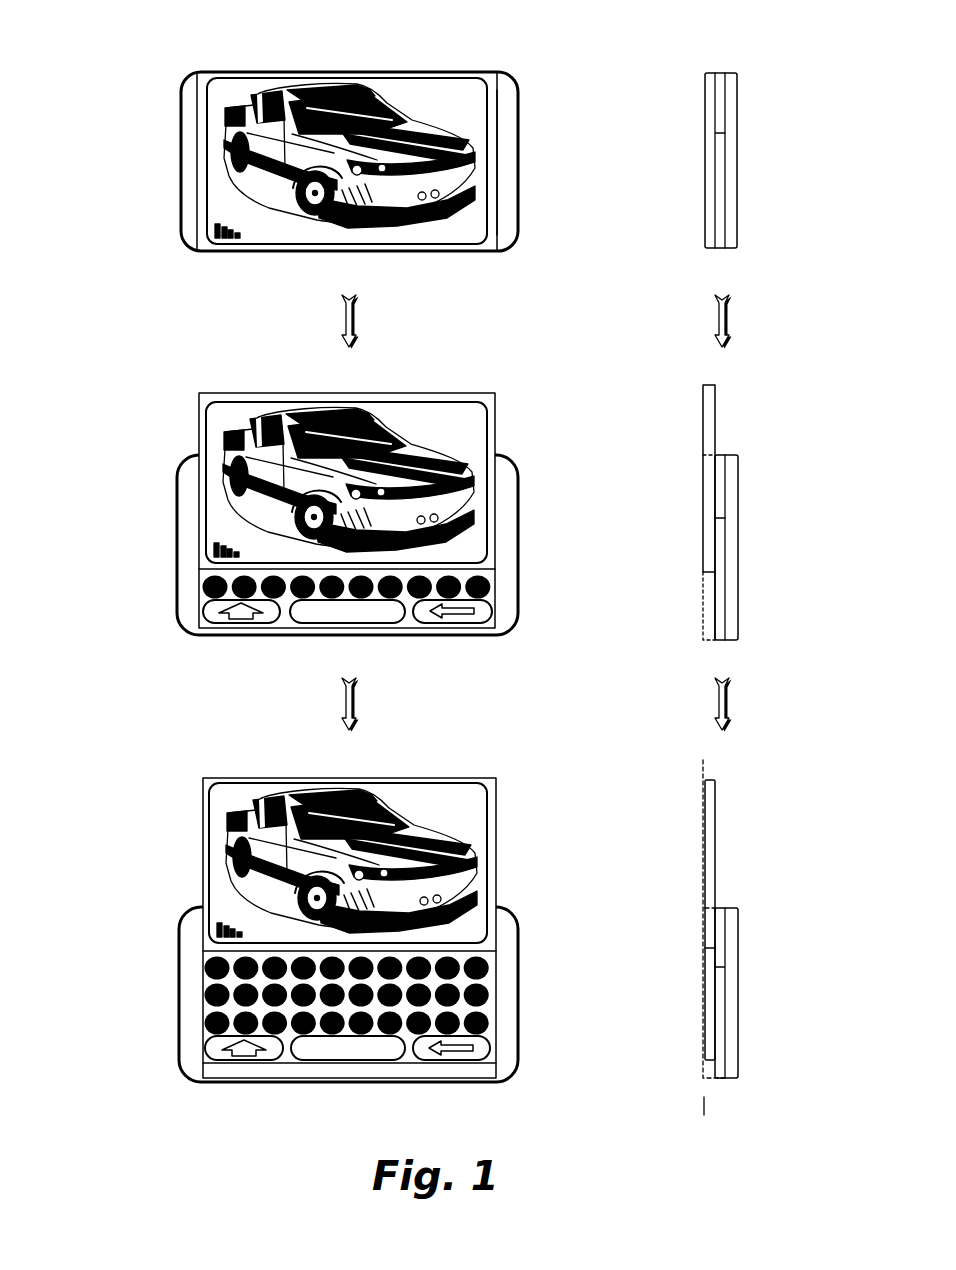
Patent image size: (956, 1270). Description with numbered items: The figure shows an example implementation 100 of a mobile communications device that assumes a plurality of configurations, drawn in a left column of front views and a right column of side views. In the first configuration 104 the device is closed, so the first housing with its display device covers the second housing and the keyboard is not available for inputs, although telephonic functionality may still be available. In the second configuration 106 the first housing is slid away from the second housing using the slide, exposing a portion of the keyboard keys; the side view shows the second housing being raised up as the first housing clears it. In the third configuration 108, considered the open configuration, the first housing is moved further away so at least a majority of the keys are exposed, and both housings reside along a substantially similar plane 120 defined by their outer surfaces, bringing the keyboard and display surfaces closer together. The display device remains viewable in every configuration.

The example implementation 100 is at (125, 56).
The first configuration 104 is at (131, 120).
The second configuration 106 is at (131, 482).
The third configuration 108 is at (131, 872).
The substantially similar plane 120 is at (704, 766).